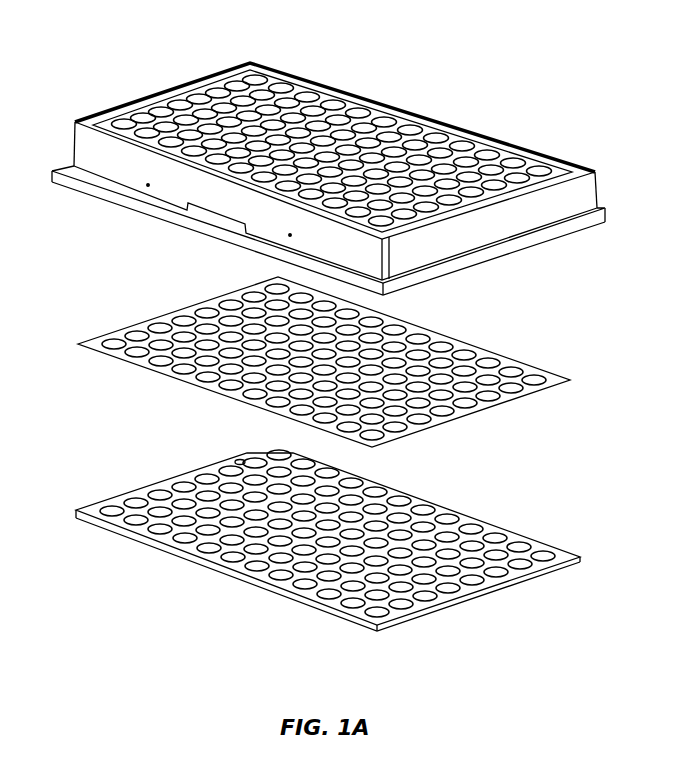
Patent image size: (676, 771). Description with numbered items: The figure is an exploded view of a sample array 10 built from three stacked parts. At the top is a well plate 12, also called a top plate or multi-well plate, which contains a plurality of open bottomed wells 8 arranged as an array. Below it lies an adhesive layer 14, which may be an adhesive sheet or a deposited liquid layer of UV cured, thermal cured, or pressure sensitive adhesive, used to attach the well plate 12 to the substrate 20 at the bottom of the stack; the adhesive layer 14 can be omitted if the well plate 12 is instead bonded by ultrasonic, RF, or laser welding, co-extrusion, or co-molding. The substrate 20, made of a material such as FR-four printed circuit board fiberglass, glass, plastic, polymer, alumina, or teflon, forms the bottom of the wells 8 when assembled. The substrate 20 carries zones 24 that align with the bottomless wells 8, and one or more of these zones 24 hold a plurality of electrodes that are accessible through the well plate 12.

The sample array 10 is at (499, 70).
The open bottomed wells 8 is at (188, 108).
The well plate 12 is at (600, 205).
The adhesive layer 14 is at (580, 380).
The substrate 20 is at (585, 557).
The zones 24 is at (491, 537).